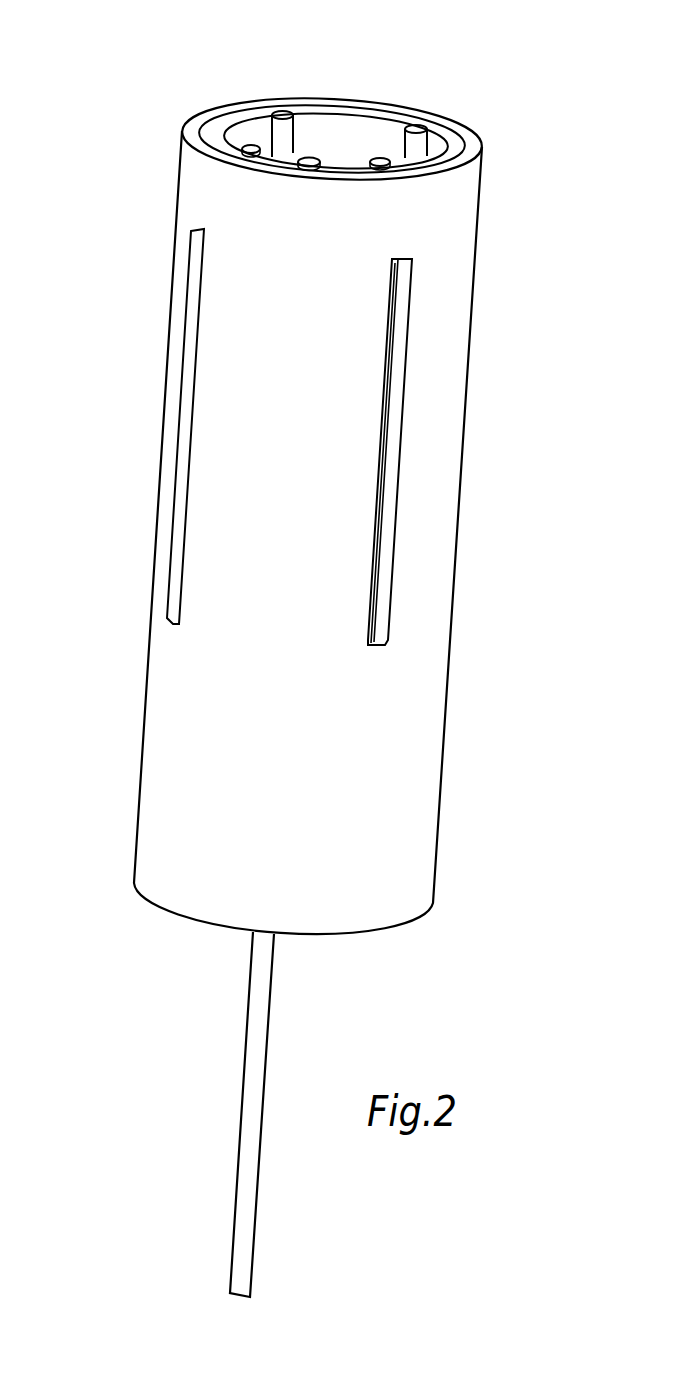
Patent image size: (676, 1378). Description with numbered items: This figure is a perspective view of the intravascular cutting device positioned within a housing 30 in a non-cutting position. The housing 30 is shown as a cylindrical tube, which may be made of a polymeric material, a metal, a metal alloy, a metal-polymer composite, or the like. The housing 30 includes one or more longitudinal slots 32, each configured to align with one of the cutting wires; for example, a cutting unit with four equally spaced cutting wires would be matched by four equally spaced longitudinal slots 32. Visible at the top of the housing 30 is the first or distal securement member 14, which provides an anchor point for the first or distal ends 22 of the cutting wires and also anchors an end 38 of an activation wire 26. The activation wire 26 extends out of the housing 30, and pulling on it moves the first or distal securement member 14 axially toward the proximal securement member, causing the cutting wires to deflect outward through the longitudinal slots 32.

The first or distal securement member 14 is at (467, 143).
The first or distal ends of the cutting wires 22 is at (248, 146).
The end of the activation wire 38 is at (313, 159).
The housing 30 is at (373, 785).
The longitudinal slots 32 is at (190, 385).
The activation wire 26 is at (250, 1088).